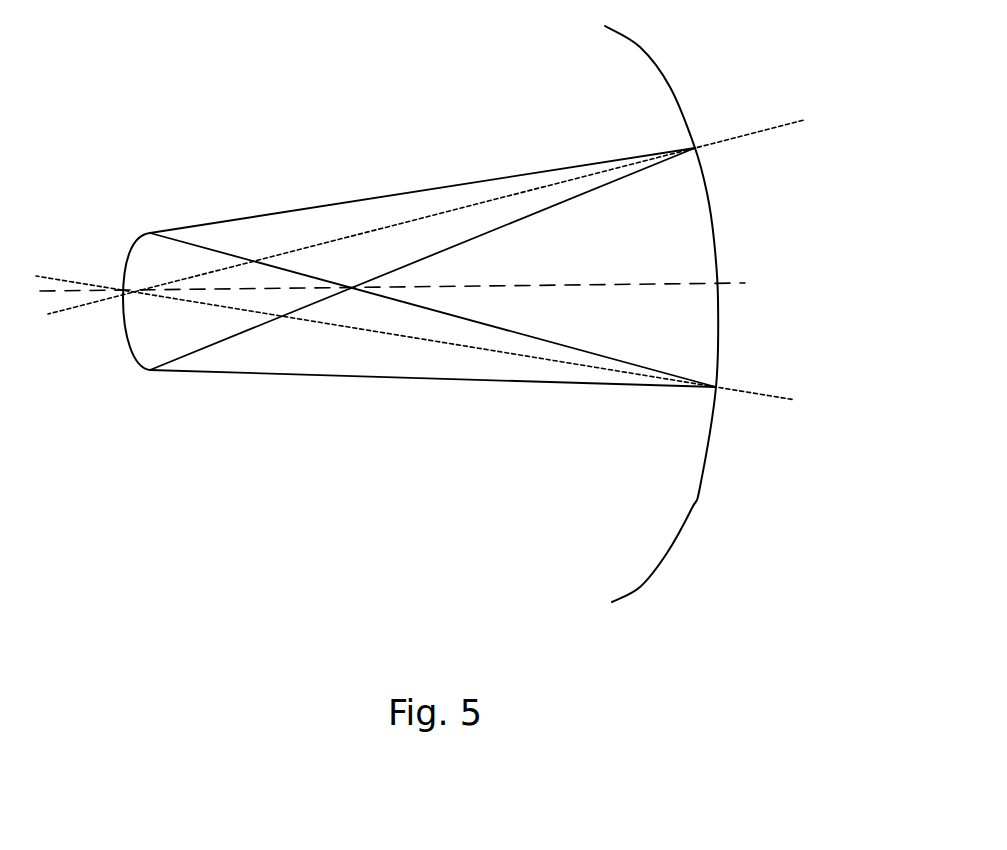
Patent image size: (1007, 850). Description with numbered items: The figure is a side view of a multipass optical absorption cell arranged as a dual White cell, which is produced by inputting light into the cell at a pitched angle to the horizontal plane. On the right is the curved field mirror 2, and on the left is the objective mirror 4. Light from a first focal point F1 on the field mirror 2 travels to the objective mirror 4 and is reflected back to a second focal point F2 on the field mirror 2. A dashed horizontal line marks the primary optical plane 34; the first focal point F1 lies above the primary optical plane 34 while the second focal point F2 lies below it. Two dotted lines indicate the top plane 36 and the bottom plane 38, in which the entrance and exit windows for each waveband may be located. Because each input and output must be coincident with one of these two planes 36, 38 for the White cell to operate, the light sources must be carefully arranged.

The objective mirror 4 is at (130, 250).
The field mirror 2 is at (692, 508).
The top plane 36 is at (416, 218).
The bottom plane 38 is at (417, 338).
The primary optical plane 34 is at (568, 284).
The first focal point F1 is at (695, 148).
The second focal point F2 is at (716, 387).